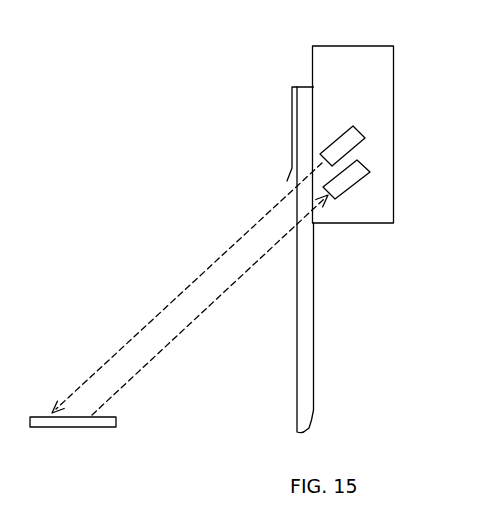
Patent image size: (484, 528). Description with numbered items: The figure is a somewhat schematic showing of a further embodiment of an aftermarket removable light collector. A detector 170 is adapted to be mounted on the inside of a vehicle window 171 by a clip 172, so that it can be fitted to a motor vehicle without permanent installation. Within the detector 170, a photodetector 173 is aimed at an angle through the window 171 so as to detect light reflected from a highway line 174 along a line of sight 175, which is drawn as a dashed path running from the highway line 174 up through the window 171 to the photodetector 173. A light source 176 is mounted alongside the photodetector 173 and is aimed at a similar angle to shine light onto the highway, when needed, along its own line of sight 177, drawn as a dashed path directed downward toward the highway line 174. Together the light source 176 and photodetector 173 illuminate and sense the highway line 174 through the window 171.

The detector 170 is at (385, 68).
The vehicle window 171 is at (312, 342).
The clip 172 is at (292, 131).
The photodetector 173 is at (358, 175).
The highway line 174 is at (108, 425).
The line of sight 175 is at (188, 327).
The light source 176 is at (357, 142).
The line of sight 177 is at (200, 278).